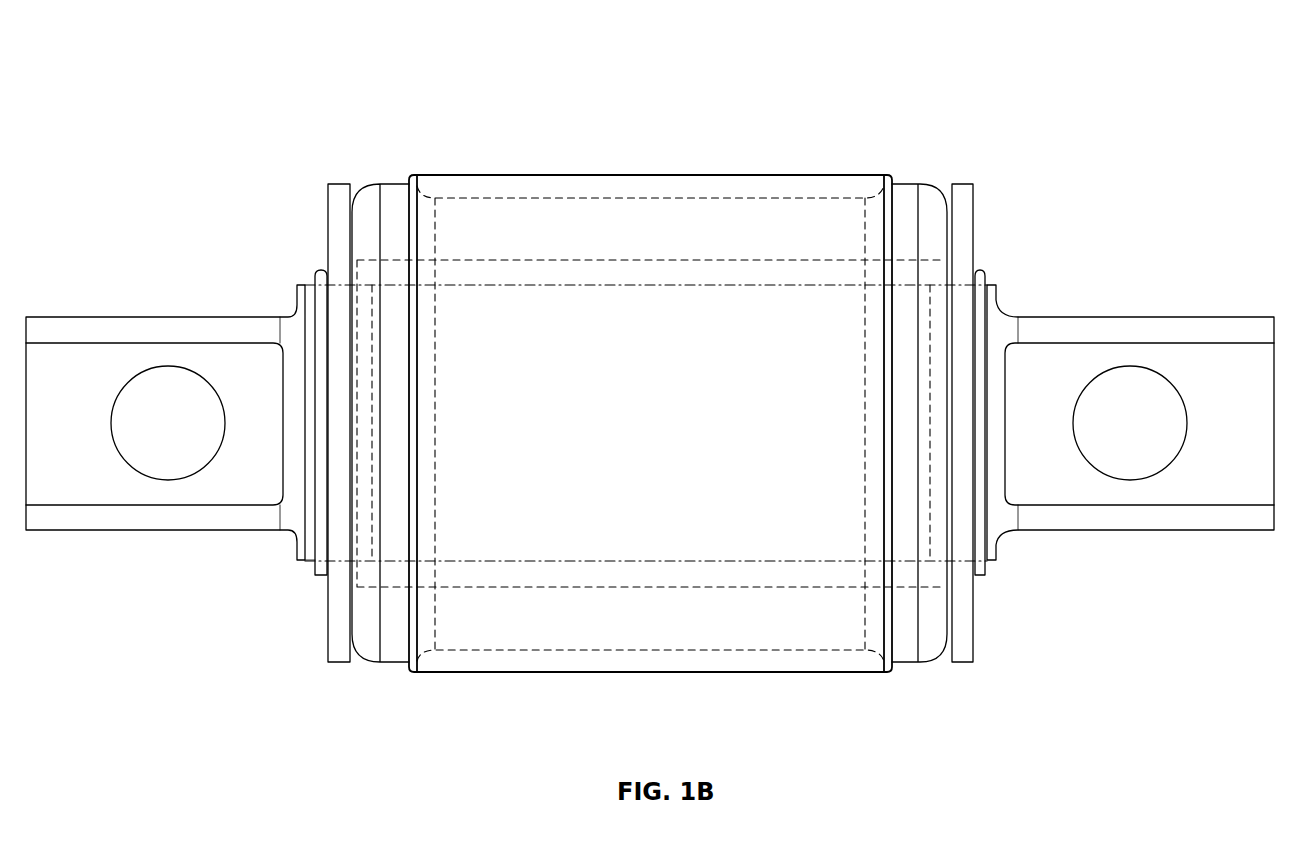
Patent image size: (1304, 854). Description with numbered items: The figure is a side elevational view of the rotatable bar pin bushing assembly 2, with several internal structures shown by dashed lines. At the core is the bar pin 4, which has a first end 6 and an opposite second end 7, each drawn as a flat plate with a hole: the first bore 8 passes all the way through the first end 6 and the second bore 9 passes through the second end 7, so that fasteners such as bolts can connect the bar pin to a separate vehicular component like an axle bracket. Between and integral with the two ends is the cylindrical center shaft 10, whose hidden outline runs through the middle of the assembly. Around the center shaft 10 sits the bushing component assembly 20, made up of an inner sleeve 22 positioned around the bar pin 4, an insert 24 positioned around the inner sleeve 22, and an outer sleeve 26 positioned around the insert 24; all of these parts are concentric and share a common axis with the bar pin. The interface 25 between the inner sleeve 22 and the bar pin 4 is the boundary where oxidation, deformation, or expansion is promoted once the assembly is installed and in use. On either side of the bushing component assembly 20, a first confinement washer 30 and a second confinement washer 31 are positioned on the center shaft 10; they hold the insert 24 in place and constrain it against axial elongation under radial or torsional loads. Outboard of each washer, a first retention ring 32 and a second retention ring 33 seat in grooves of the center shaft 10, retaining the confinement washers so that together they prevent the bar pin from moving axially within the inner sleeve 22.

The rotatable bar pin bushing assembly 2 is at (140, 76).
The bar pin 4 is at (1130, 444).
The first end 6 is at (165, 426).
The second end 7 is at (1240, 412).
The first bore 8 is at (178, 382).
The second bore 9 is at (1132, 382).
The center shaft 10 is at (310, 550).
The bushing component assembly 20 is at (545, 168).
The inner sleeve 22 is at (649, 437).
The insert 24 is at (905, 203).
The interface 25 is at (665, 562).
The outer sleeve 26 is at (481, 662).
The first confinement washer 30 is at (337, 207).
The second confinement washer 31 is at (963, 645).
The first retention ring 32 is at (322, 270).
The second retention ring 33 is at (978, 272).